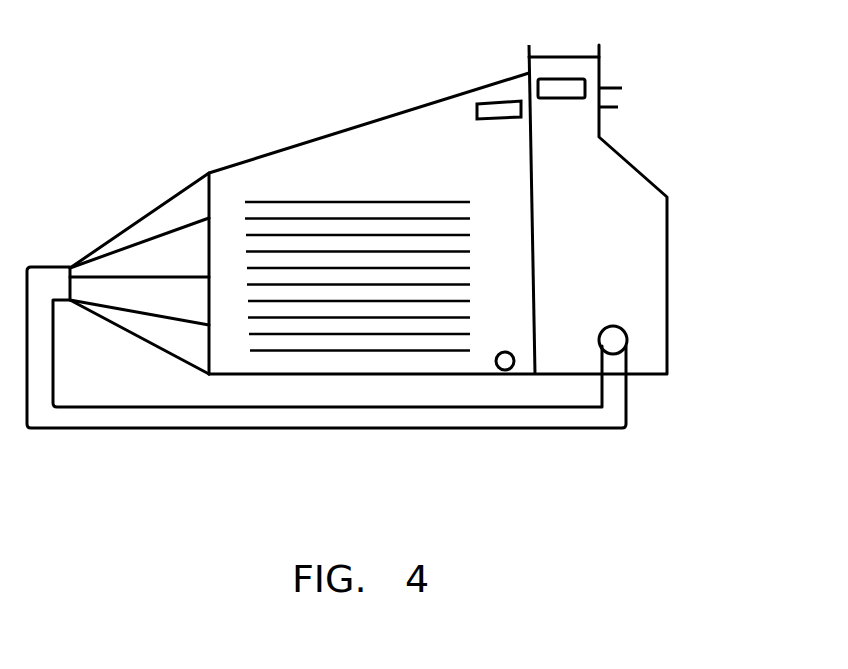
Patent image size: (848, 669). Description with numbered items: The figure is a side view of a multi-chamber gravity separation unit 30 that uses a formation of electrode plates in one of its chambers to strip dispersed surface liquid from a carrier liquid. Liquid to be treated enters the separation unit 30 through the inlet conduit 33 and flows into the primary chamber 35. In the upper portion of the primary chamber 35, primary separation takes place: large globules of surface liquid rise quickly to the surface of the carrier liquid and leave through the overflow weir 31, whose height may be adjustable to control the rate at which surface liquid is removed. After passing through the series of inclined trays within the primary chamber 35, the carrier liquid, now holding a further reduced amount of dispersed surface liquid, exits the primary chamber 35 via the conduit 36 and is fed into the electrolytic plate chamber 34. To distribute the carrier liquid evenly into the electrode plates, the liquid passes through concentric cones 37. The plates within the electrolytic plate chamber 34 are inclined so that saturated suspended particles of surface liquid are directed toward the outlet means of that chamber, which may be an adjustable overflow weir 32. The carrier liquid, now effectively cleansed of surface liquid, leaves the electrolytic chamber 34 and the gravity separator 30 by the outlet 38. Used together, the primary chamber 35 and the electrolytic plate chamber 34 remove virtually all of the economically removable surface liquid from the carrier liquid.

The multi-chamber gravity separation unit 30 is at (647, 177).
The overflow weir 31 is at (555, 78).
The adjustable overflow weir 32 is at (500, 102).
The inlet conduit 33 is at (617, 98).
The electrolytic plate chamber 34 is at (408, 188).
The primary chamber 35 is at (615, 252).
The conduit 36 is at (568, 428).
The concentric cones 37 is at (130, 227).
The outlet 38 is at (498, 369).